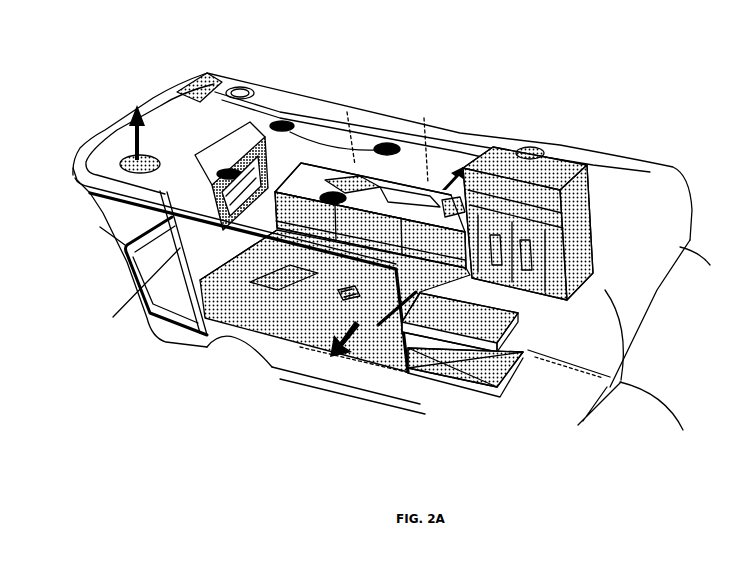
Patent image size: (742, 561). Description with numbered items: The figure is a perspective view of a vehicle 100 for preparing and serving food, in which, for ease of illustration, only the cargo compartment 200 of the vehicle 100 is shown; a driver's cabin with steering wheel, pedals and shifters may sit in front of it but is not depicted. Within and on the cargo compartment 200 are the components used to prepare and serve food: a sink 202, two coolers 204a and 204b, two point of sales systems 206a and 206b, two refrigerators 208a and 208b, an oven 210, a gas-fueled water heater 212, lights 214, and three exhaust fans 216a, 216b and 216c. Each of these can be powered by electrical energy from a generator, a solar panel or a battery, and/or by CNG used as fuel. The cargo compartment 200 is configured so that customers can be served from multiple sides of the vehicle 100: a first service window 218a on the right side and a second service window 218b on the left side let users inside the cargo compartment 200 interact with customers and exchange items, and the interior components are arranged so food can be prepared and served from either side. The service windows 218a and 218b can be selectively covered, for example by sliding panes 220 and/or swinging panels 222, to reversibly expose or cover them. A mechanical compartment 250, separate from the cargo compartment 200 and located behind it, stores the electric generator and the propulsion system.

The vehicle 100 is at (633, 52).
The cargo compartment 200 is at (680, 145).
The mechanical compartment 250 is at (81, 229).
The sink 202 is at (215, 235).
The cooler 204a is at (352, 183).
The cooler 204b is at (270, 284).
The point of sales (POS) system 206a is at (450, 193).
The point of sales (POS) system 206b is at (345, 297).
The refrigerator 208a is at (577, 213).
The refrigerator 208b is at (469, 358).
The oven 210 is at (175, 226).
The gas-fueled water heater 212 is at (241, 88).
The lights 214 is at (290, 123).
The exhaust fan 216a is at (130, 167).
The exhaust fan 216b is at (530, 150).
The exhaust fan 216c is at (197, 83).
The first service window 218a is at (330, 284).
The second service window 218b is at (422, 146).
The sliding panes 220 is at (366, 322).
The swinging panels 222 is at (388, 350).